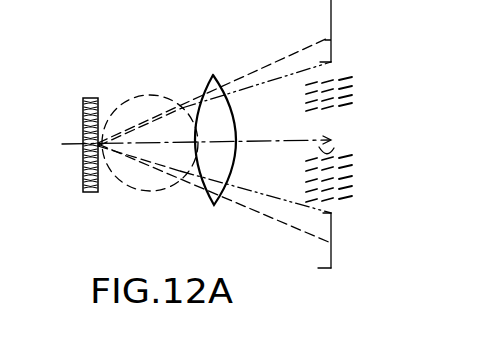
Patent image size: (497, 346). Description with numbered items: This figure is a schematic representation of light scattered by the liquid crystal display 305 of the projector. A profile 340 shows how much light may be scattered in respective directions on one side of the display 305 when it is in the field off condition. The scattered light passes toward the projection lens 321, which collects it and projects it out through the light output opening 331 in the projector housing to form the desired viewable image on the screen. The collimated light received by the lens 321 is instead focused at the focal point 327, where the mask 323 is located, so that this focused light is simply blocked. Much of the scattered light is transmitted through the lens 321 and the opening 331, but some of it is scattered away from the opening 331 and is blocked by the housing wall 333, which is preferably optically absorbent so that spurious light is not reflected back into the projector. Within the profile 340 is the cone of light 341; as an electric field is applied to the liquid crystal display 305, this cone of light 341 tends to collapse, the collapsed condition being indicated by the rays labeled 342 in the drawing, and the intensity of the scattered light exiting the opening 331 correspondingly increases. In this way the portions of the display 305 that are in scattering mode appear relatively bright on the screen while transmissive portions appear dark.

The liquid crystal display 305 is at (85, 97).
The profile 340 is at (123, 98).
The projection lens 321 is at (212, 76).
The mask 323 is at (331, 138).
The focal point 327 is at (333, 152).
The light output opening 331 is at (338, 203).
The walls 333 is at (318, 268).
The cone of light 341 is at (250, 210).
The marginal light ray 342 is at (280, 203).